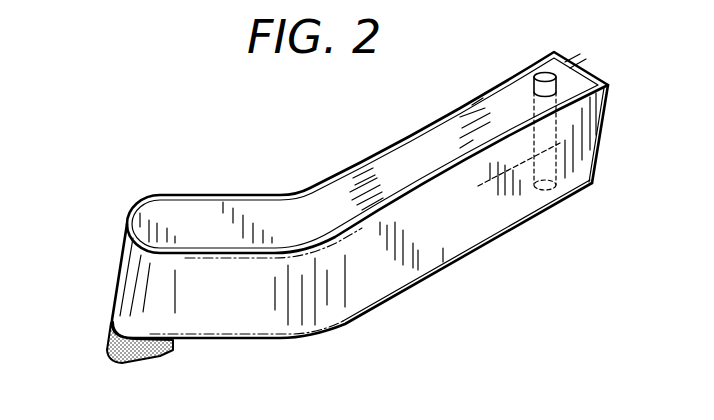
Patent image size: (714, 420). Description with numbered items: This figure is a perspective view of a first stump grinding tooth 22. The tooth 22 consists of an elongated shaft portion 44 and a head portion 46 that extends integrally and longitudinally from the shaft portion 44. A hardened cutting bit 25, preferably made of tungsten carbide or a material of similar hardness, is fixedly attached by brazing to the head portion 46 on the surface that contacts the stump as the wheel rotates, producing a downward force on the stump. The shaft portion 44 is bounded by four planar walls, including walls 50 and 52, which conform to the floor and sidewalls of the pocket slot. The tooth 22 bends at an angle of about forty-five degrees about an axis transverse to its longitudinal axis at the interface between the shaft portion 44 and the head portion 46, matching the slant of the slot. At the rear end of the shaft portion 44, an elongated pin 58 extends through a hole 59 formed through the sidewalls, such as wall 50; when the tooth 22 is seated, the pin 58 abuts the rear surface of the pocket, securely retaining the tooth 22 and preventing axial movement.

The tooth 22 is at (224, 182).
The hardened cutting bit 25 is at (107, 345).
The shaft portion 44 is at (425, 143).
The head portion 46 is at (208, 320).
The planar wall 50 is at (350, 197).
The planar wall 52 is at (443, 247).
The elongated pin 58 is at (558, 72).
The hole 59 is at (563, 182).